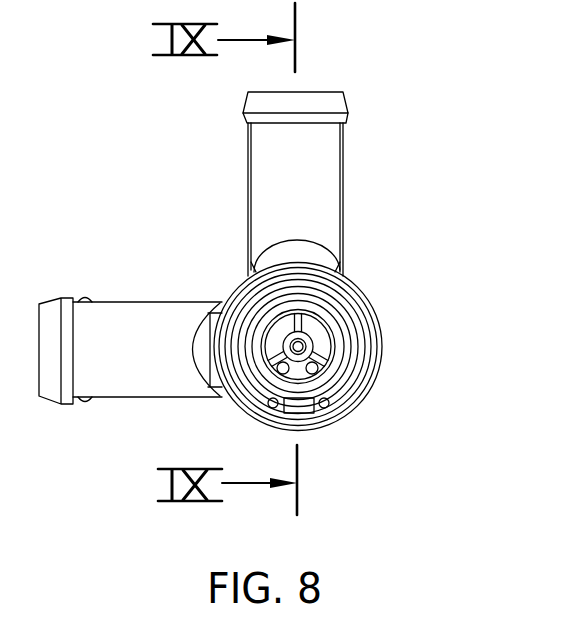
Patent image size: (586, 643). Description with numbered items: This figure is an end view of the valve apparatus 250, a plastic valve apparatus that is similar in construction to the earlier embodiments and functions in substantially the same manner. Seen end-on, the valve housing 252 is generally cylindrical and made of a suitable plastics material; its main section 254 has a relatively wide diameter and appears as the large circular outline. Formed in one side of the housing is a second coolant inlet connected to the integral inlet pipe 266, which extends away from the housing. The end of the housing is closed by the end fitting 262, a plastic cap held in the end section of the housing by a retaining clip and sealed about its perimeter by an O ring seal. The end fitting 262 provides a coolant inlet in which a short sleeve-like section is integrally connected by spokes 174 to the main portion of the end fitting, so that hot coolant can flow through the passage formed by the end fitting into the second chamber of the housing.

The valve apparatus 250 is at (273, 277).
The integral inlet pipe 266 is at (272, 194).
The valve housing 252 is at (373, 303).
The main section 254 is at (383, 342).
The end fitting or cap 262 is at (335, 378).
The spokes 174 is at (320, 367).